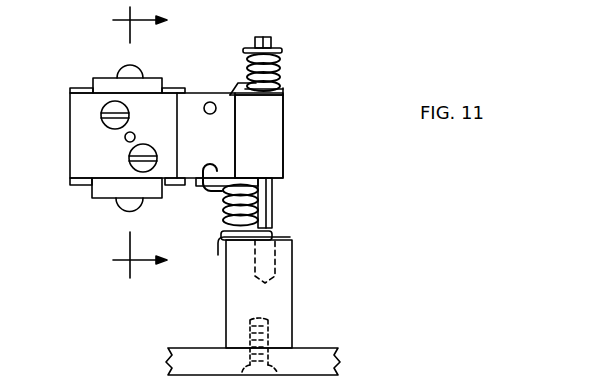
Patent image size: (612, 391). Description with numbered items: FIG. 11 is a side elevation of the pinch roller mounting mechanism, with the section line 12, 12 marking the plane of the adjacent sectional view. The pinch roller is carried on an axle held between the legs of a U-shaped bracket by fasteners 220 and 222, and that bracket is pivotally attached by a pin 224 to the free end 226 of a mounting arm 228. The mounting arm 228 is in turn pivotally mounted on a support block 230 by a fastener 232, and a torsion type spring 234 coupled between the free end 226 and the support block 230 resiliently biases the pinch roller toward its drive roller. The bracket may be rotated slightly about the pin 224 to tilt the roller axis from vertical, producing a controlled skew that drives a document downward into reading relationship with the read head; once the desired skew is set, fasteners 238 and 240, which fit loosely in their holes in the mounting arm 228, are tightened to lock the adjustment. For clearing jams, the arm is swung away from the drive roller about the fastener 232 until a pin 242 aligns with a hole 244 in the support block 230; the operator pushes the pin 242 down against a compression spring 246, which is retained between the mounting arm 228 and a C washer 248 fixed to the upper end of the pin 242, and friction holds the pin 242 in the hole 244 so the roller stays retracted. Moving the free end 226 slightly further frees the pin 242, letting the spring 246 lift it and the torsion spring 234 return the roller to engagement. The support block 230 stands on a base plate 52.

The section line 12- 12 is at (154, 142).
The base plate 52 is at (195, 360).
The fastener 220 is at (123, 70).
The fastener 222 is at (122, 208).
The pin 224 is at (135, 132).
The free end 226 is at (86, 153).
The mounting arm 228 is at (268, 133).
The support block 230 is at (275, 303).
The fastener 232 is at (238, 90).
The torsion type spring 234 is at (228, 208).
The fastener 238 is at (101, 112).
The fastener 240 is at (130, 163).
The pin 242 is at (274, 202).
The hole 244 is at (272, 262).
The compression spring 246 is at (280, 75).
The C washer 248 is at (282, 50).